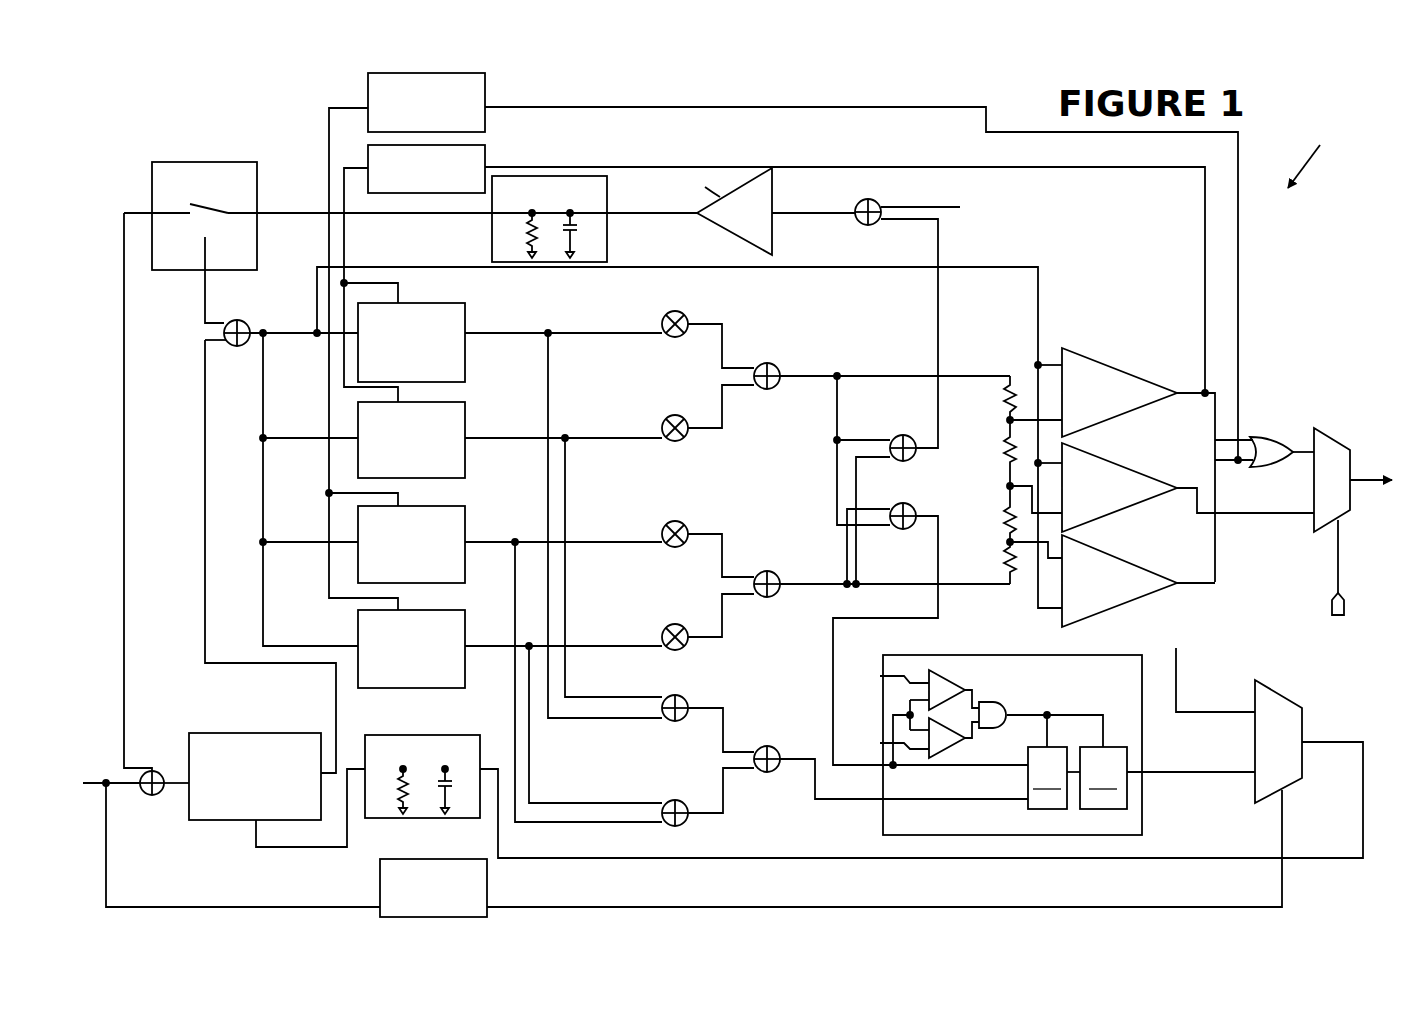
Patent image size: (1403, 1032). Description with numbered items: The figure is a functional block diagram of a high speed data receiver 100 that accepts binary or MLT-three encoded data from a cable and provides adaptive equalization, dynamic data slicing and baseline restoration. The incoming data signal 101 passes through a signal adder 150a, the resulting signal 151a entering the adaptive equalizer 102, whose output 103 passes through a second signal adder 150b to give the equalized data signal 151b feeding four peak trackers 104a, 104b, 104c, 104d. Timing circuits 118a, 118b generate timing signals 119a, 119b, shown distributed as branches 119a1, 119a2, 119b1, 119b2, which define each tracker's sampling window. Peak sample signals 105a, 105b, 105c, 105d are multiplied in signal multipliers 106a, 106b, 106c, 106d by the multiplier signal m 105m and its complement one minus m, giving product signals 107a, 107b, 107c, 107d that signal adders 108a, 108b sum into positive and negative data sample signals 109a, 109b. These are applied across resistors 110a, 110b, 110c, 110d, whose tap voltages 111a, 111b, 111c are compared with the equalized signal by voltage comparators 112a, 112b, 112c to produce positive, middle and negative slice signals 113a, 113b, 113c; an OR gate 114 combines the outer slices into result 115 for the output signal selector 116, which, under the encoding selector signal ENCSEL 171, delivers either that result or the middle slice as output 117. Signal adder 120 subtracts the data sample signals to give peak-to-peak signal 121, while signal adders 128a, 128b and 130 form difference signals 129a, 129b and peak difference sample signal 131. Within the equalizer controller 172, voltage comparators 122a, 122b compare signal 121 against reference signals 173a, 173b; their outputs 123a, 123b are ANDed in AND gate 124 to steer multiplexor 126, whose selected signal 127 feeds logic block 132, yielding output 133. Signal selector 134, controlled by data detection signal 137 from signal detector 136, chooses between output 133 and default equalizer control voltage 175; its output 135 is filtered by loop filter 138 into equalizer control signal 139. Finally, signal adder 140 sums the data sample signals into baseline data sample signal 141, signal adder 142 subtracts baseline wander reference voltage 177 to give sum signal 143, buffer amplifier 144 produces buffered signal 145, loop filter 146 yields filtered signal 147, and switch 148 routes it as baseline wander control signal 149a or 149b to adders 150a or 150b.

The high speed data receiver 100 is at (1322, 153).
The incoming data signal 101 is at (116, 780).
The adaptive equalizer 102 is at (256, 733).
The equalized data signal 103 is at (205, 380).
The peak tracker 104a is at (425, 294).
The peak tracker 104b is at (465, 415).
The peak tracker 104c is at (465, 520).
The peak tracker 104d is at (465, 680).
The peak sample signal 105a is at (485, 332).
The peak sample signal 105b is at (523, 437).
The peak sample signal 105c is at (515, 541).
The peak sample signal 105d is at (495, 645).
The multiplier signal 105m is at (645, 315).
The signal multiplier 106a is at (686, 322).
The signal multiplier 106b is at (686, 420).
The signal multiplier 106c is at (686, 532).
The signal multiplier 106d is at (700, 613).
The peak sample product signal 107a is at (722, 350).
The peak sample product signal 107b is at (722, 406).
The peak sample product signal 107c is at (722, 562).
The peak sample product signal 107d is at (722, 625).
The signal adder 108a is at (778, 368).
The signal adder 108b is at (795, 563).
The positive data sample signal 109a is at (825, 375).
The negative data sample signal 109b is at (782, 586).
The resistor 110a is at (1004, 398).
The resistor 110b is at (1004, 450).
The resistor 110c is at (1004, 522).
The resistor 110d is at (1010, 572).
The divider voltage 111a is at (1030, 415).
The divider voltage 111b is at (1045, 513).
The divider voltage 111c is at (1053, 562).
The voltage comparator 112a is at (1125, 372).
The voltage comparator 112b is at (1128, 468).
The voltage comparator 112c is at (1128, 563).
The positive slice signal 113a is at (1205, 390).
The middle slice signal 113b is at (1280, 514).
The negative slice signal 113c is at (1218, 575).
The OR gate 114 is at (1260, 437).
The OR result 115 is at (1300, 450).
The output signal selector 116 is at (1332, 436).
The output signal 117 is at (1364, 484).
The timing circuit 118a is at (485, 160).
The timing circuit 118b is at (485, 104).
The timing signal 119a is at (344, 178).
The timing signal 119b is at (329, 118).
The timing signal branch 119a1 is at (360, 282).
The timing signal branch 119a2 is at (344, 387).
The timing signal branch 119b1 is at (329, 493).
The timing signal branch 119b2 is at (335, 605).
The signal adder 120 is at (914, 525).
The peak-to-peak data sample signal 121 is at (918, 618).
The voltage comparator 122a is at (912, 668).
The voltage comparator 122b is at (948, 756).
The comparator output 123a is at (972, 690).
The comparator output 123b is at (968, 740).
The AND gate 124 is at (983, 700).
The multiplexor 126 is at (1047, 778).
The selected signal 127 is at (1073, 770).
The signal adder 128a is at (686, 706).
The signal adder 128b is at (685, 803).
The difference signal 129a is at (723, 735).
The difference signal 129b is at (724, 812).
The signal adder 130 is at (778, 750).
The peak difference sample signal 131 is at (848, 803).
The logic block 132 is at (1103, 778).
The equalizer controller output 133 is at (1142, 771).
The signal selector 134 is at (1278, 692).
The signal selector output 135 is at (1315, 744).
The signal detector 136 is at (380, 896).
The data detection signal 137 is at (552, 906).
The loop filter 138 is at (392, 735).
The equalizer control signal 139 is at (265, 848).
The signal adder 140 is at (912, 435).
The baseline data sample signal 141 is at (940, 248).
The signal adder 142 is at (860, 204).
The sum signal 143 is at (797, 216).
The buffer amplifier 144 is at (716, 218).
The buffered signal 145 is at (660, 216).
The loop filter 146 is at (492, 220).
The buffered and filtered signal 147 is at (434, 216).
The switch 148 is at (185, 162).
The baseline wander control signal 149a is at (124, 213).
The baseline wander control signal 149b is at (205, 318).
The signal adder 150a is at (156, 797).
The signal adder 150b is at (245, 346).
The summer output 151a is at (178, 776).
The equalized data signal 151b is at (290, 330).
The encoding selector signal ENCSEL 171 is at (1340, 566).
The equalizer controller 172 is at (1145, 813).
The reference signal 173a is at (879, 674).
The reference signal 173b is at (879, 730).
The default equalizer control voltage 175 is at (1208, 710).
The baseline wander reference voltage 177 is at (918, 206).